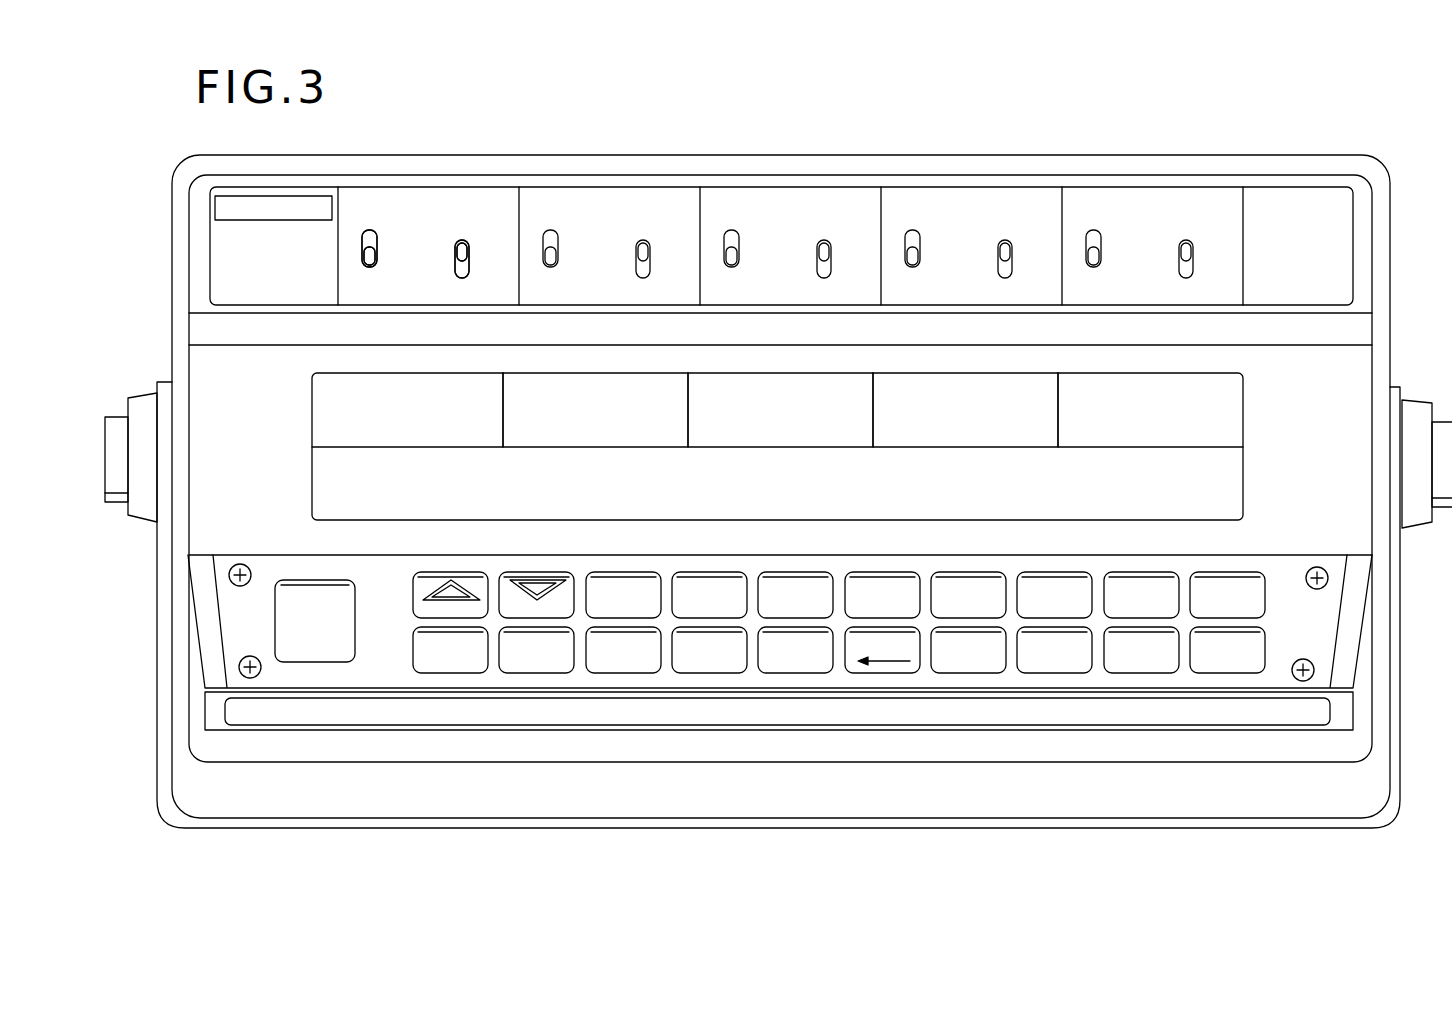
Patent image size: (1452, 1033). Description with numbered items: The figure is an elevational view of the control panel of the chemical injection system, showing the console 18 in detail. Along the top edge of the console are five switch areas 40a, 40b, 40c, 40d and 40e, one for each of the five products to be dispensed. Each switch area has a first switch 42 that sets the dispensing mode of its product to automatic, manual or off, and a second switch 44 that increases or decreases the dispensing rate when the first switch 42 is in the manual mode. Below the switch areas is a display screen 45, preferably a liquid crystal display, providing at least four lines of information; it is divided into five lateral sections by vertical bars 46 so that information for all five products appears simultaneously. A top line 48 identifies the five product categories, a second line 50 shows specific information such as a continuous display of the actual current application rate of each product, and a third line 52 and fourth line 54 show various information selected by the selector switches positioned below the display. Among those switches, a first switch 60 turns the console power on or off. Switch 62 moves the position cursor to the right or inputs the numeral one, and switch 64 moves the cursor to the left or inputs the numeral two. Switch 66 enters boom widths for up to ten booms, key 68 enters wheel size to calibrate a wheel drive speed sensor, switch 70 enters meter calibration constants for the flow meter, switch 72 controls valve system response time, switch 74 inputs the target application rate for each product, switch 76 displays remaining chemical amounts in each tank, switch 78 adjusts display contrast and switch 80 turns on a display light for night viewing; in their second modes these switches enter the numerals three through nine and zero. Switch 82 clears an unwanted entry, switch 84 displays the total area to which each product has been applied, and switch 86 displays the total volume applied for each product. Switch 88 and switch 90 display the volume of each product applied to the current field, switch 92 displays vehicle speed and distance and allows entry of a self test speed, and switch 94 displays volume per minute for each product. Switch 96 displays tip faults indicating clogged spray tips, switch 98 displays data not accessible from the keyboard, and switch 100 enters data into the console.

The console 18 is at (722, 158).
The switch area 40a is at (500, 207).
The switch area 40b is at (680, 207).
The switch area 40c is at (860, 207).
The switch area 40d is at (1040, 207).
The switch area 40e is at (1220, 207).
The first switch 42 is at (362, 238).
The second switch 44 is at (456, 272).
The display screen 45 is at (337, 389).
The vertical bars 46 is at (505, 393).
The top line 48 is at (296, 393).
The second line 50 is at (296, 430).
The third line 52 is at (296, 463).
The fourth line 54 is at (296, 505).
The first switch 60 is at (320, 594).
The switch 62 is at (482, 582).
The switch 64 is at (568, 582).
The switch 66 is at (655, 582).
The key 68 is at (741, 582).
The switch 70 is at (827, 582).
The switch 72 is at (914, 582).
The switch 74 is at (1000, 582).
The switch 76 is at (1086, 582).
The switch 78 is at (1172, 582).
The switch 80 is at (1258, 582).
The switch 82 is at (421, 672).
The switch 84 is at (507, 672).
The switch 86 is at (594, 672).
The switch 88 is at (680, 672).
The switch 90 is at (766, 672).
The switch 92 is at (853, 672).
The switch 94 is at (939, 672).
The switch 96 is at (1025, 672).
The switch 98 is at (1112, 672).
The switch 100 is at (1197, 672).